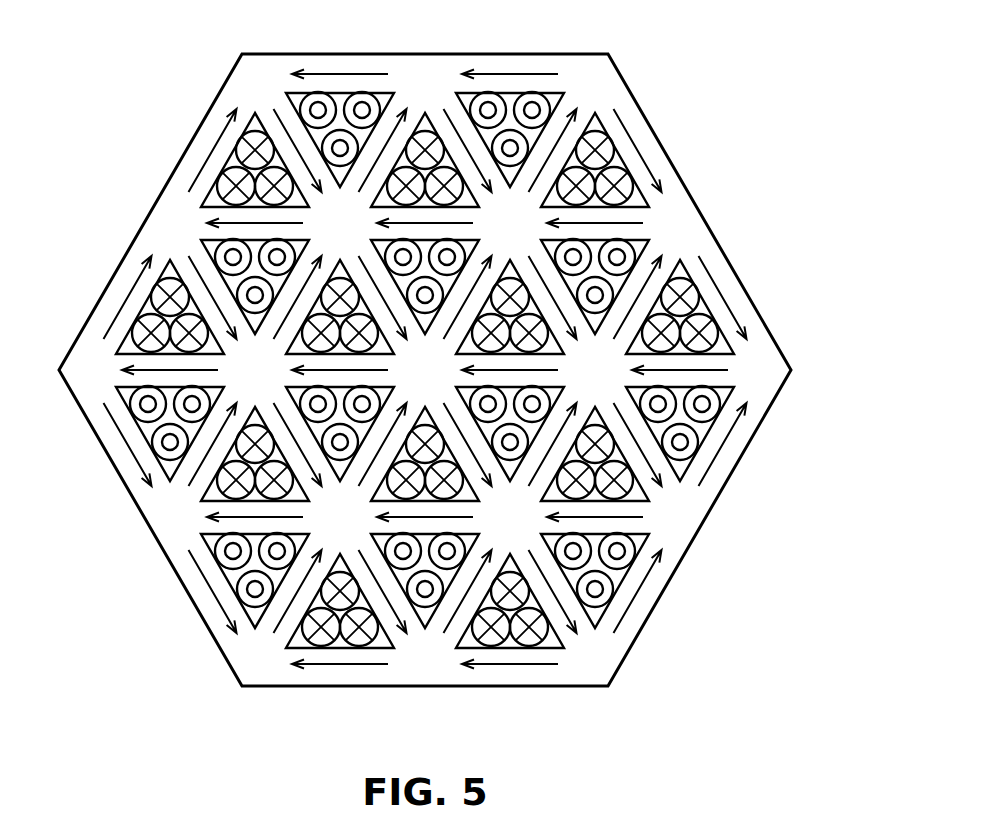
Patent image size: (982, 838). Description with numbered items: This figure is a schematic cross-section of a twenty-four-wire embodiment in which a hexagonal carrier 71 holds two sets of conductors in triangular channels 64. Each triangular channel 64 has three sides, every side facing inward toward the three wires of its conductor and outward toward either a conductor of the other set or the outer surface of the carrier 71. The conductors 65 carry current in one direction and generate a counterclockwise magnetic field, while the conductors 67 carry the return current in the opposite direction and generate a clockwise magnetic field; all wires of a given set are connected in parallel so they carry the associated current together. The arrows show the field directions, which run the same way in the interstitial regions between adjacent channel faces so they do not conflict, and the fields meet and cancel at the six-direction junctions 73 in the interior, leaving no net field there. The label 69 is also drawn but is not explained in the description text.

The up-triangle corner 64 is at (283, 93).
The down-triangle tube array 65 is at (381, 106).
The crossed tube array 67 is at (256, 138).
The tube 69 is at (642, 242).
The hexagonal housing 71 is at (604, 73).
The flow channel junction 73 is at (328, 235).